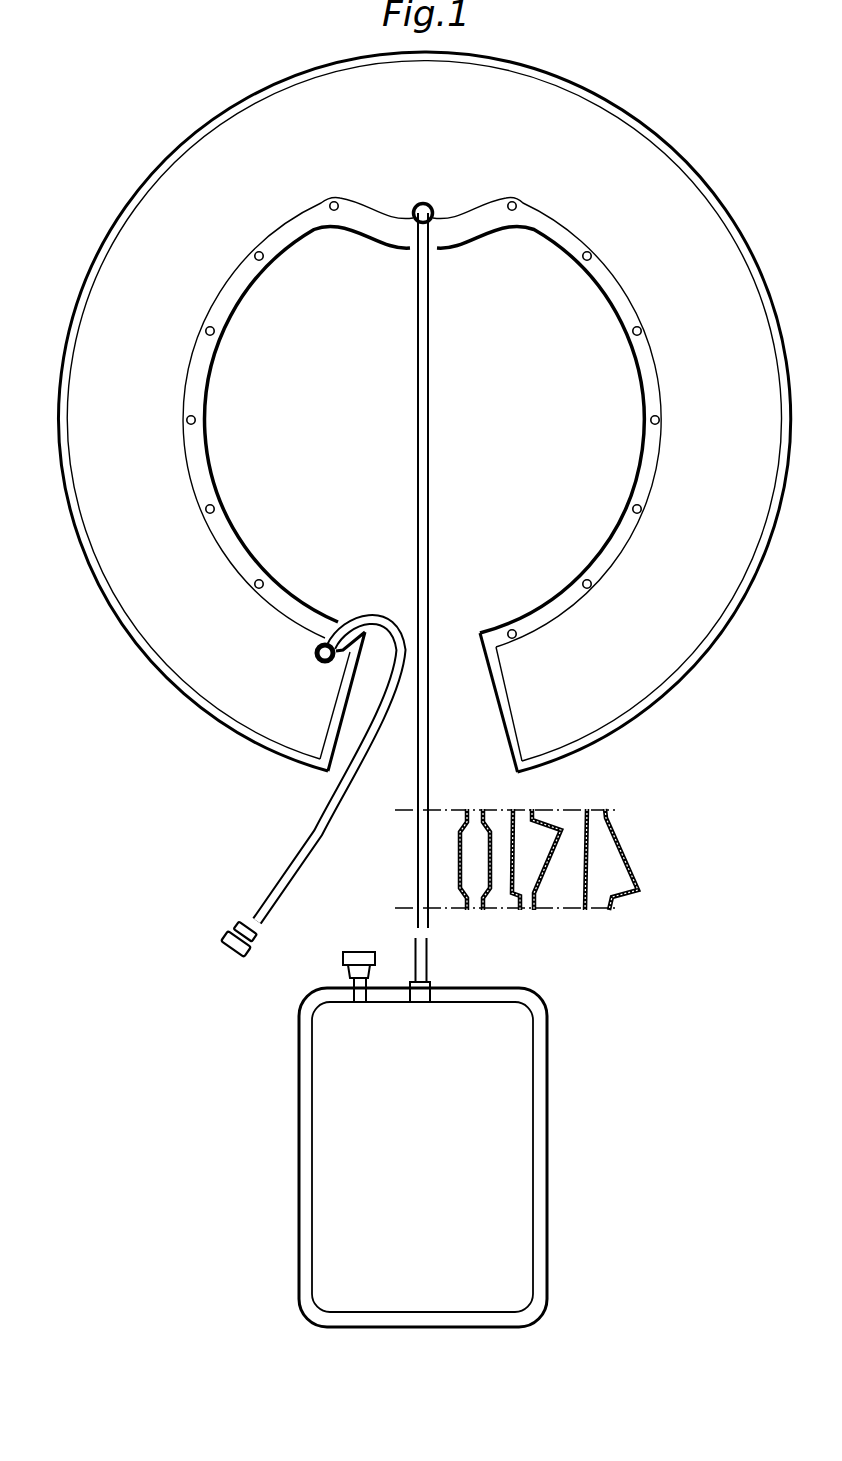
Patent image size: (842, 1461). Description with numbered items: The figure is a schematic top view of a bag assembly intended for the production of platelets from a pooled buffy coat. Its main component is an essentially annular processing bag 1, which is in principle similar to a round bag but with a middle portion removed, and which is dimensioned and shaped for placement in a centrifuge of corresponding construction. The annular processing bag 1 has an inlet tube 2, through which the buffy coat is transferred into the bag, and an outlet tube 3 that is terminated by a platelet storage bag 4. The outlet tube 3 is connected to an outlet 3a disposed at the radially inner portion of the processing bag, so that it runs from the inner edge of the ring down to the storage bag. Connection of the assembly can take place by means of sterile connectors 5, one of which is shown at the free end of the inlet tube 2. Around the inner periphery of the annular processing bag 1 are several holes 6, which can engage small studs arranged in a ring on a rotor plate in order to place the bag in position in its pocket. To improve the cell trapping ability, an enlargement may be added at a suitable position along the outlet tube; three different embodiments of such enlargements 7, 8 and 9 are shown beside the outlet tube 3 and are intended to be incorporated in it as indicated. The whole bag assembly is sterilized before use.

The annular processing bag 1 is at (700, 182).
The inlet tube 2 is at (313, 833).
The outlet tube 3 is at (429, 543).
The outlet 3a is at (424, 201).
The platelet storage bag 4 is at (328, 1143).
The sterile connector 5 is at (225, 935).
The holes 6 is at (631, 336).
The enlargement 7 is at (474, 911).
The enlargement 8 is at (527, 911).
The enlargement 9 is at (601, 911).